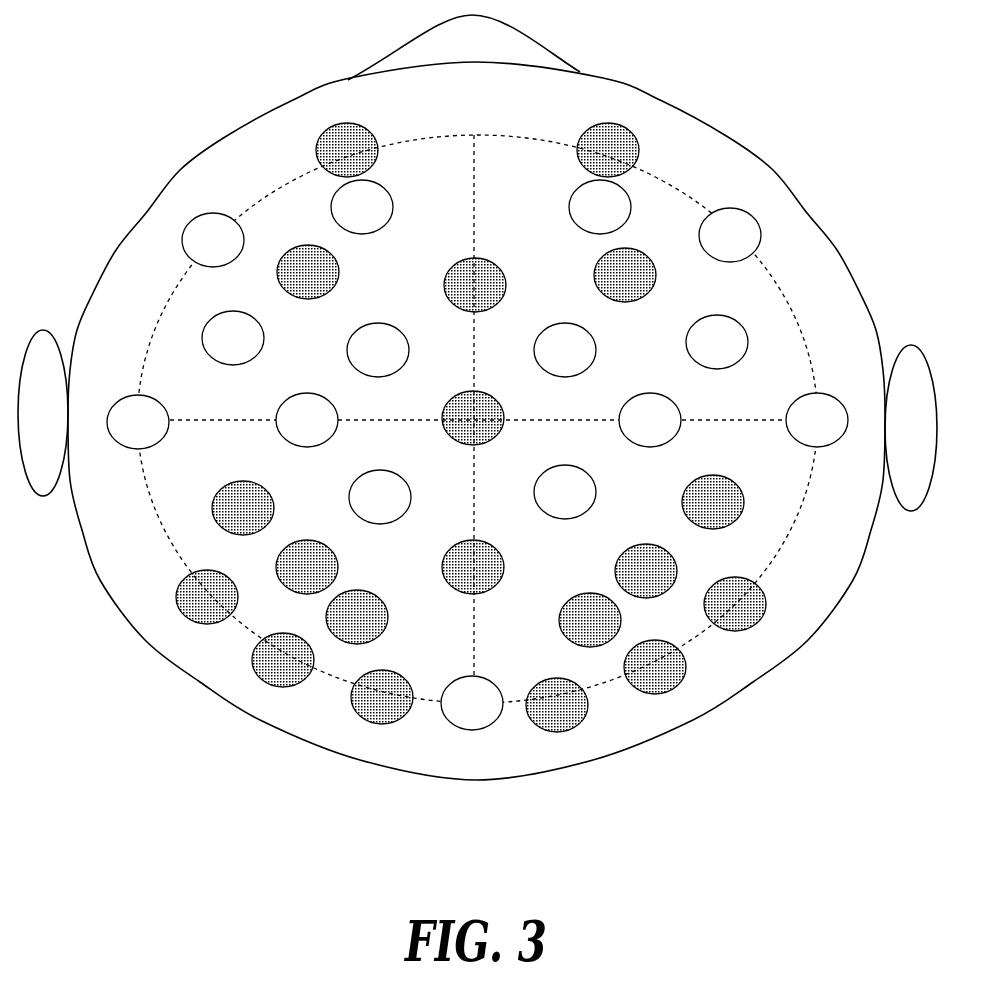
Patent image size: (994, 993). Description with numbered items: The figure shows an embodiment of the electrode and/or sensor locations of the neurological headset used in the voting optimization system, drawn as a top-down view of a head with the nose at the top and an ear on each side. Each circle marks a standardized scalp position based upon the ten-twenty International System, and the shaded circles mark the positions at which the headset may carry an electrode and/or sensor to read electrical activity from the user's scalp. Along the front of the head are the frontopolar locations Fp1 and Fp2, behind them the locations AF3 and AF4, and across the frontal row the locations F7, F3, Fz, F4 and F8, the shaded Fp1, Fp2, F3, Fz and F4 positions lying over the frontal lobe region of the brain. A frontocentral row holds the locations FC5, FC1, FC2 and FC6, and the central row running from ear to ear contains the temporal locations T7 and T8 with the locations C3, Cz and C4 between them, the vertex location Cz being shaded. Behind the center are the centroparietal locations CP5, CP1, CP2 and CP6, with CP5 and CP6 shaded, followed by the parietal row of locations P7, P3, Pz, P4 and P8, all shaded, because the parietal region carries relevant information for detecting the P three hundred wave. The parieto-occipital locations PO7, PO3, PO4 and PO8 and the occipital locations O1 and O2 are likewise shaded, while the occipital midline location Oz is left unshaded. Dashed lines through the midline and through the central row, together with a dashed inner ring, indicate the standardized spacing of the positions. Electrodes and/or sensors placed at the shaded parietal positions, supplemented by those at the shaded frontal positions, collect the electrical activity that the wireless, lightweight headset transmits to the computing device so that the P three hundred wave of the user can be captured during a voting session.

The Fp1 electrode location Fp1 is at (347, 150).
The Fp2 electrode location Fp2 is at (608, 150).
The AF3 electrode location AF3 is at (362, 207).
The AF4 electrode location AF4 is at (600, 207).
The F7 electrode location F7 is at (213, 240).
The F3 electrode location F3 is at (308, 272).
The Fz electrode location Fz is at (475, 285).
The F4 electrode location F4 is at (625, 275).
The F8 electrode location F8 is at (730, 235).
The FC5 electrode location FC5 is at (233, 338).
The FC1 electrode location FC1 is at (378, 350).
The FC2 electrode location FC2 is at (565, 350).
The FC6 electrode location FC6 is at (717, 342).
The T7 electrode location T7 is at (138, 422).
The C3 electrode location C3 is at (307, 420).
The Cz electrode location Cz is at (473, 418).
The C4 electrode location C4 is at (650, 420).
The T8 electrode location T8 is at (817, 420).
The CP5 electrode location CP5 is at (243, 508).
The CP1 electrode location CP1 is at (380, 497).
The CP2 electrode location CP2 is at (565, 492).
The CP6 electrode location CP6 is at (713, 502).
The P7 electrode location P7 is at (207, 597).
The P3 electrode location P3 is at (307, 567).
The Pz electrode location Pz is at (473, 567).
The P4 electrode location P4 is at (646, 571).
The P8 electrode location P8 is at (735, 604).
The PO7 electrode location PO7 is at (283, 660).
The PO3 electrode location PO3 is at (357, 617).
The PO4 electrode location PO4 is at (590, 620).
The PO8 electrode location PO8 is at (655, 667).
The O1 electrode location O1 is at (382, 697).
The Oz electrode location Oz is at (472, 703).
The O2 electrode location O2 is at (557, 705).